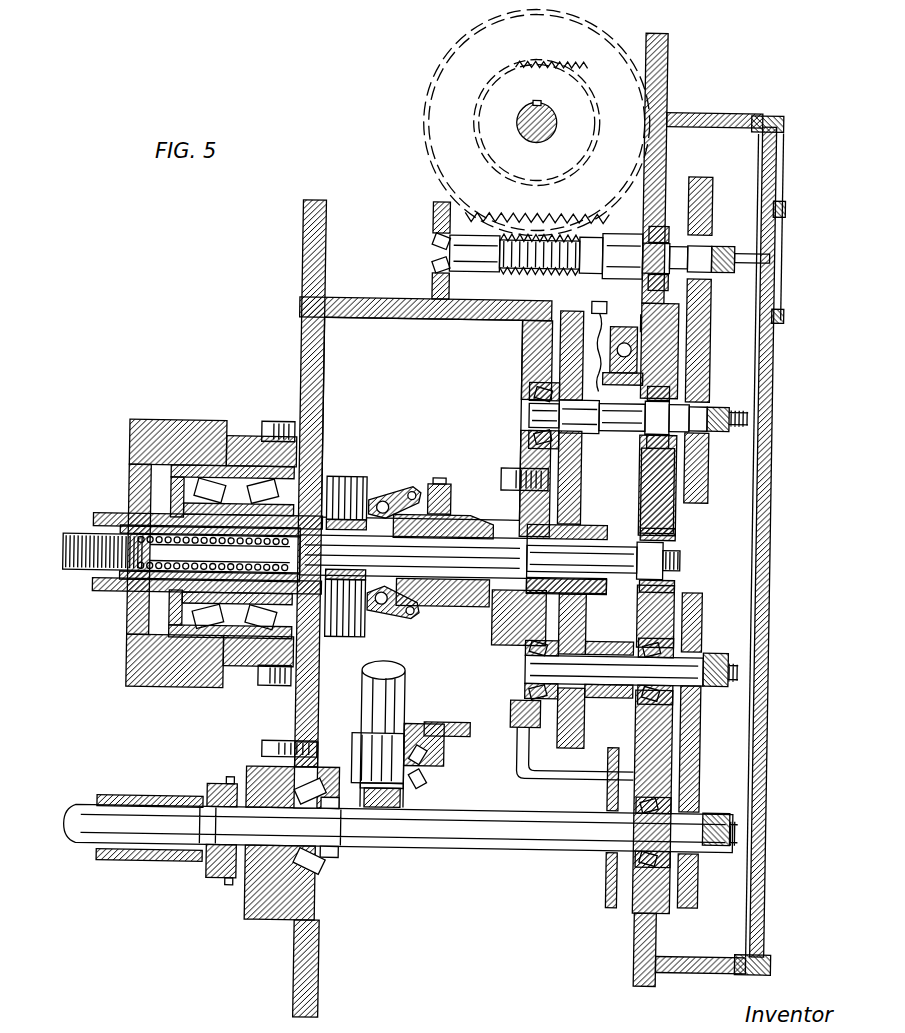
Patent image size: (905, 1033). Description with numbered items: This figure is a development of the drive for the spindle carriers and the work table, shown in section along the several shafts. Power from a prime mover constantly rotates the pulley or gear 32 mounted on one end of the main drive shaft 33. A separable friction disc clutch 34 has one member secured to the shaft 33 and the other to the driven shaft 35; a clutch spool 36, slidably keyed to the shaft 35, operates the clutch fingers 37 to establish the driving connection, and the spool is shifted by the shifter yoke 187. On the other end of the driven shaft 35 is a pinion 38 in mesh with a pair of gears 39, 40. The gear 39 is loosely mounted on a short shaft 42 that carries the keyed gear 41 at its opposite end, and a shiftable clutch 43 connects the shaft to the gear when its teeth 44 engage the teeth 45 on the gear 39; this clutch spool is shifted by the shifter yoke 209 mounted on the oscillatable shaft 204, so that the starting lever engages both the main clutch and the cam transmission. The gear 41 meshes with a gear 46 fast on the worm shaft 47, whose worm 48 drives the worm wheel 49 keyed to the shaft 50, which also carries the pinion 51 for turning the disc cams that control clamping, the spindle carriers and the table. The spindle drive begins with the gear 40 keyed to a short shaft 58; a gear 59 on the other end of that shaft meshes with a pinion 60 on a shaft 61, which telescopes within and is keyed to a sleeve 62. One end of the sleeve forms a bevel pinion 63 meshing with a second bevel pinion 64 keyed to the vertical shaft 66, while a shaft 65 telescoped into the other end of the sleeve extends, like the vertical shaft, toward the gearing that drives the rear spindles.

The pulley or gear 32 is at (222, 428).
The main drive shaft 33 is at (185, 615).
The separable friction disc clutch 34 is at (345, 478).
The driven shaft 35 is at (458, 582).
The clutch spool 36 is at (460, 514).
The clutch fingers 37 is at (382, 500).
The pinion 38 is at (585, 540).
The gear 39 is at (574, 500).
The gear 40 is at (575, 640).
The gear 41 is at (700, 378).
The short shaft 42 is at (718, 446).
The shiftable clutch 43 is at (640, 462).
The clutch teeth 44 is at (624, 335).
The gear teeth 45 is at (593, 341).
The gear 46 is at (703, 215).
The worm shaft 47 is at (455, 262).
The worm 48 is at (560, 276).
The worm wheel 49 is at (440, 150).
The worm wheel shaft 50 is at (546, 116).
The pinion 51 is at (568, 160).
The short shaft 58 is at (616, 686).
The gear 59 is at (707, 751).
The pinion 60 is at (695, 792).
The shaft 61 is at (472, 840).
The sleeve 62 is at (205, 790).
The bevel pinion 63 is at (335, 872).
The bevel pinion 64 is at (438, 778).
The shaft 65 is at (92, 790).
The vertical shaft 66 is at (405, 706).
The shifter yoke 187 is at (470, 460).
The oscillatable shaft 204 is at (636, 352).
The shifter yoke 209 is at (640, 330).